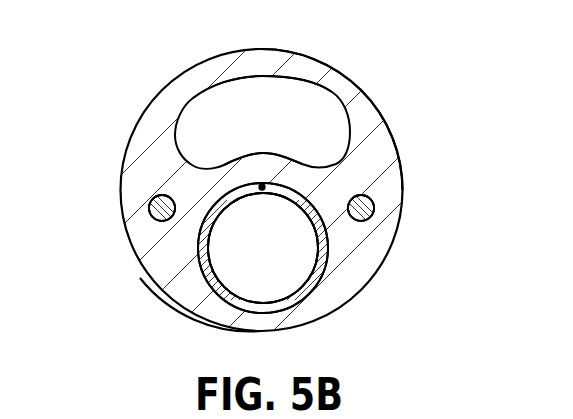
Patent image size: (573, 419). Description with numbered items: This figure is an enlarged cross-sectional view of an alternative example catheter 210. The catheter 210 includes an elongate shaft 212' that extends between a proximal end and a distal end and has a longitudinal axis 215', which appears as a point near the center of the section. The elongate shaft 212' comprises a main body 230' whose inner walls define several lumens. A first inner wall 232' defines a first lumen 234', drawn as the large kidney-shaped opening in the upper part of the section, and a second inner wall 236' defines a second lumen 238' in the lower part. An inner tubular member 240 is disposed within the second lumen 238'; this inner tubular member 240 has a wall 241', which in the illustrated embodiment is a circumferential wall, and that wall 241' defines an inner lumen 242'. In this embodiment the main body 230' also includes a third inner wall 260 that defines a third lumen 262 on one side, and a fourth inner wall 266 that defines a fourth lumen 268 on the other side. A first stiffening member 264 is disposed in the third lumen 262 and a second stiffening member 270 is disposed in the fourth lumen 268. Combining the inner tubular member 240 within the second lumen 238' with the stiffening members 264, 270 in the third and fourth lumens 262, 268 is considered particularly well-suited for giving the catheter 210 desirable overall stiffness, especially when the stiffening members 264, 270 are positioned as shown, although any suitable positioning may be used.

The catheter 210 is at (133, 49).
The elongate shaft 212' is at (286, 200).
The main body 230' is at (346, 119).
The first inner wall 232' is at (262, 59).
The first lumen 234' is at (262, 122).
The longitudinal axis 215' is at (266, 158).
The third lumen 262 is at (150, 204).
The first stiffening member 264 is at (160, 208).
The third inner wall 260 is at (156, 218).
The fourth lumen 268 is at (373, 195).
The second stiffening member 270 is at (366, 207).
The fourth inner wall 266 is at (372, 218).
The wall 241' is at (279, 248).
The inner tubular member 240 is at (318, 287).
The inner lumen 242' is at (263, 248).
The second lumen 238' is at (263, 248).
The second inner wall 236' is at (177, 295).